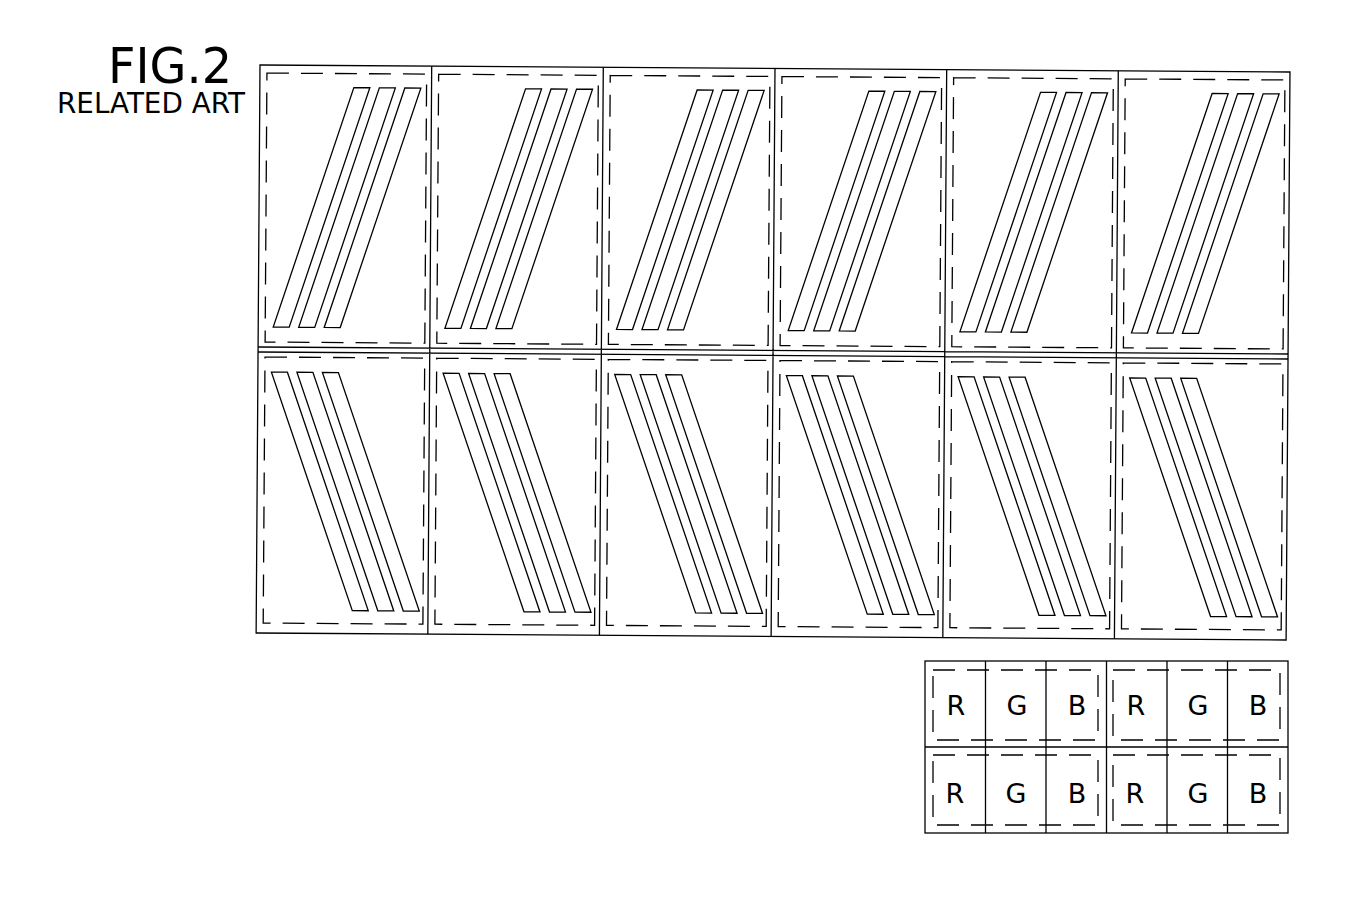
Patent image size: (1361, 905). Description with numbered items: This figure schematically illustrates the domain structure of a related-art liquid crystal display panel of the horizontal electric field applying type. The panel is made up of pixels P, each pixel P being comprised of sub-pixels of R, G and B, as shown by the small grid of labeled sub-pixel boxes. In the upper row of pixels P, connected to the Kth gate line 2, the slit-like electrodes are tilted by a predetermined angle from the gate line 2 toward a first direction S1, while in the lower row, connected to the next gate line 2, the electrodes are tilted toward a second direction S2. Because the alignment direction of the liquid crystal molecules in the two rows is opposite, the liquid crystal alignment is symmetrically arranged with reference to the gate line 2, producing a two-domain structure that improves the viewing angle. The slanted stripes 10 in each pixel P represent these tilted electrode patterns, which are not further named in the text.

The gate line 2 is at (1273, 358).
The pixel P is at (1282, 122).
The slit pattern 10 is at (346, 349).
The first direction S1 is at (250, 163).
The second direction S2 is at (247, 545).